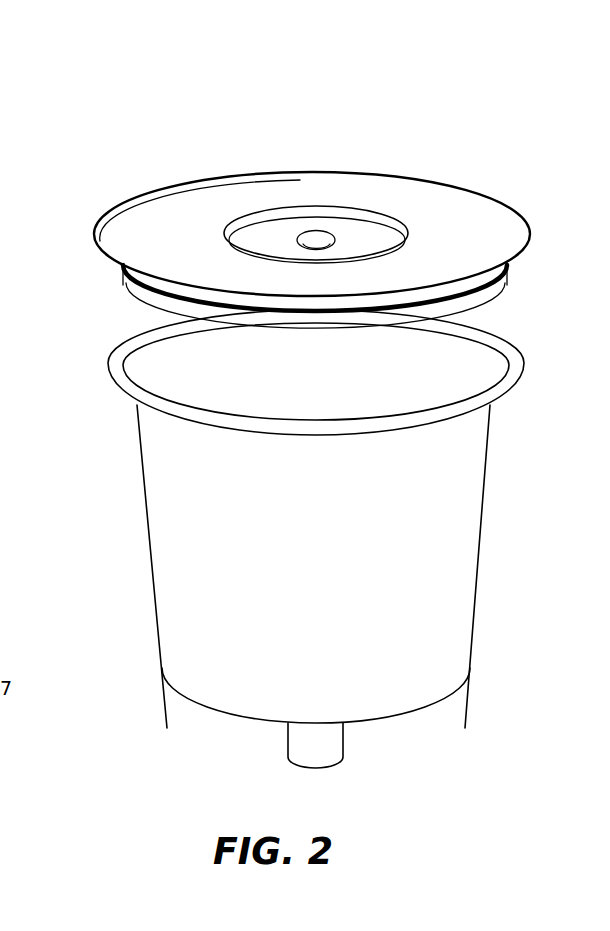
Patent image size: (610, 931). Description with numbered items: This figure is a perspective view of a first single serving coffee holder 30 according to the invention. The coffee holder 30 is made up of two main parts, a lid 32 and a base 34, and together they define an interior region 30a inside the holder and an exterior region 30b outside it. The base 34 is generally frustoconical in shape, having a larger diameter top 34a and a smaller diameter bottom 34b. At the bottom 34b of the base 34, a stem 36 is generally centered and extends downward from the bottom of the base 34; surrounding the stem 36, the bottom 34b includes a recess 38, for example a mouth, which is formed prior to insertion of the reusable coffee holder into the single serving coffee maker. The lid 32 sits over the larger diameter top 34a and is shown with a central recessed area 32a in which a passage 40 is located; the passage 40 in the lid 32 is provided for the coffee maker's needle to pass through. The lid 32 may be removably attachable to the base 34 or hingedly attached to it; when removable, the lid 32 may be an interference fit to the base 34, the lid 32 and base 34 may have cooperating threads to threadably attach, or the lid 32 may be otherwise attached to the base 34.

The single serving coffee holder 30 is at (318, 441).
The interior region 30a is at (313, 227).
The exterior region 30b is at (318, 583).
The lid 32 is at (327, 208).
The recess in lid 32a is at (365, 228).
The base 34 is at (349, 519).
The larger diameter top 34a is at (492, 407).
The smaller diameter bottom 34b is at (450, 665).
The stem 36 is at (318, 743).
The recess 38 is at (224, 738).
The passage 40 is at (316, 240).